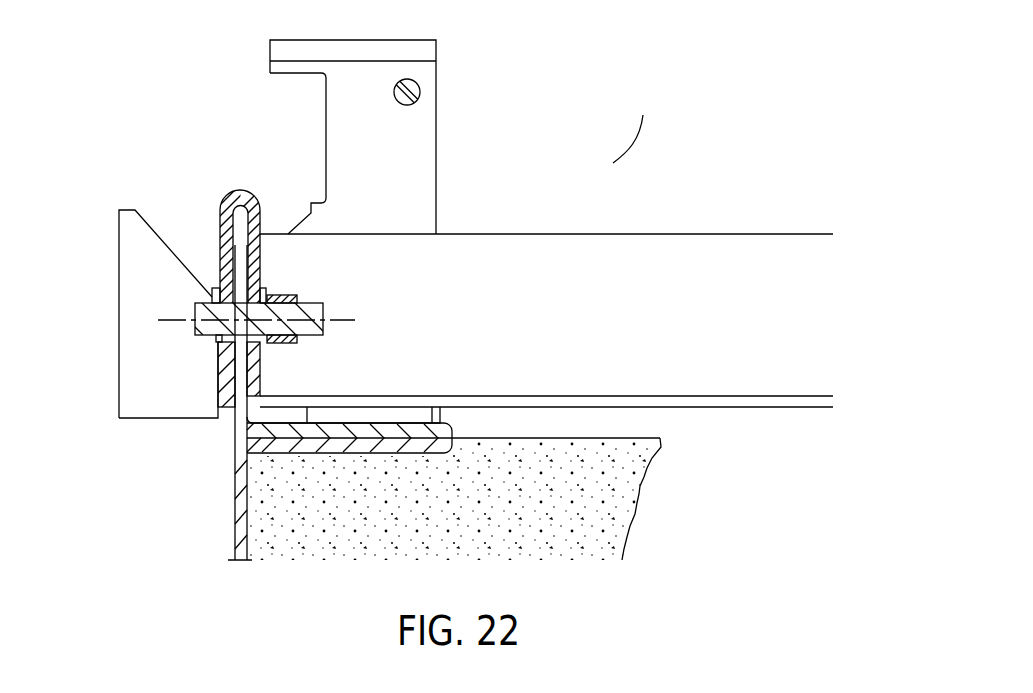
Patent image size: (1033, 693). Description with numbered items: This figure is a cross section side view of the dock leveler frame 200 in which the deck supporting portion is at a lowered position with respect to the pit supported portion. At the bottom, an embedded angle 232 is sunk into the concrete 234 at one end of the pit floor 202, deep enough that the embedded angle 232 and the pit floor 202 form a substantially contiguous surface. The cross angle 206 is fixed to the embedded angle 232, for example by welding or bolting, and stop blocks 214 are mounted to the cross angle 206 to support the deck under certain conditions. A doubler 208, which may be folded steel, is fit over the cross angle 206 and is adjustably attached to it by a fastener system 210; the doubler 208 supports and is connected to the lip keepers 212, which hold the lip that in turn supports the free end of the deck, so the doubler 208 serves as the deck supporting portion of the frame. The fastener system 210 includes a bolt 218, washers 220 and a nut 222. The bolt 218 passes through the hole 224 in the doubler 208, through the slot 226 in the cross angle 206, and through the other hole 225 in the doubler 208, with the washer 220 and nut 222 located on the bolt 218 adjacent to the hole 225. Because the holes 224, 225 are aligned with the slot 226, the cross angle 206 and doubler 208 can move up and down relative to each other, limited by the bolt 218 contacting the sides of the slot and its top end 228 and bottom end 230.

The dock leveler frame 200 is at (600, 171).
The pit floor 202 is at (573, 438).
The cross angle 206 is at (437, 430).
The doubler 208 is at (230, 193).
The fastener system 210 is at (375, 274).
The lip keepers 212 is at (133, 265).
The stop blocks 214 is at (433, 47).
The bolt 218 is at (198, 302).
The washers 220 is at (215, 346).
The nut 222 is at (285, 343).
The hole 224 is at (216, 352).
The hole 225 is at (263, 291).
The slot 226 is at (254, 258).
The top end 228 is at (230, 217).
The bottom end 230 is at (218, 372).
The embedded angle 232 is at (233, 535).
The concrete 234 is at (466, 521).